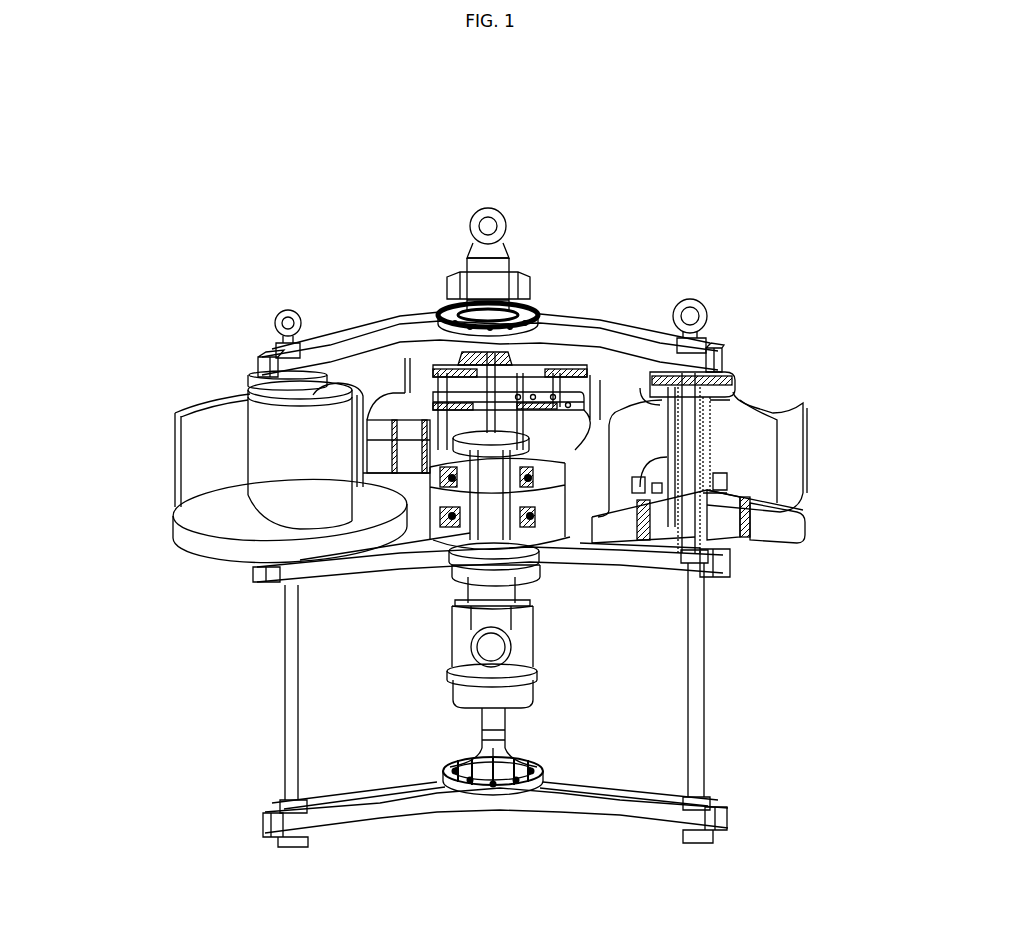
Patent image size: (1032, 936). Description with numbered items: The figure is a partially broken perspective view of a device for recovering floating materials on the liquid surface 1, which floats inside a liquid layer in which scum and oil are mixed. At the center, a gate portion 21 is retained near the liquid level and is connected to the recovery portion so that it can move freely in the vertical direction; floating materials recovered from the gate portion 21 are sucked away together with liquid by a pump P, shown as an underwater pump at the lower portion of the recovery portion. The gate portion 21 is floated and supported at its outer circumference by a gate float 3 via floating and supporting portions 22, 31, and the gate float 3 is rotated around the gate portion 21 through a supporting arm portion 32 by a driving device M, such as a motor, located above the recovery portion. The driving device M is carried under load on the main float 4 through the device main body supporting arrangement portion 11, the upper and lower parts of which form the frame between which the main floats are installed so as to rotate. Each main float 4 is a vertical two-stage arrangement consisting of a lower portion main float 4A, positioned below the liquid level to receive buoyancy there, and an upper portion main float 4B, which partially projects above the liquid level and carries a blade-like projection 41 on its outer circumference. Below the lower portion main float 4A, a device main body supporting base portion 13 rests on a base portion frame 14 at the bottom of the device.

The device for recovering floating materials on the liquid surface 1 is at (262, 206).
The driving device M is at (497, 208).
The gate float 3 is at (382, 428).
The supporting arm portion 32 is at (437, 370).
The floating and supporting portion 31 is at (558, 550).
The device main body supporting arrangement portion 11 is at (393, 355).
The device main body supporting base portion 13 is at (295, 713).
The base portion frame 14 is at (577, 805).
The gate portion 21 is at (432, 525).
The floating and supporting portion 22 is at (553, 550).
The pump P is at (468, 695).
The main float 4 is at (63, 470).
The blade-like projection 41 is at (205, 397).
The upper portion main float 4B is at (270, 400).
The lower portion main float 4A is at (197, 540).